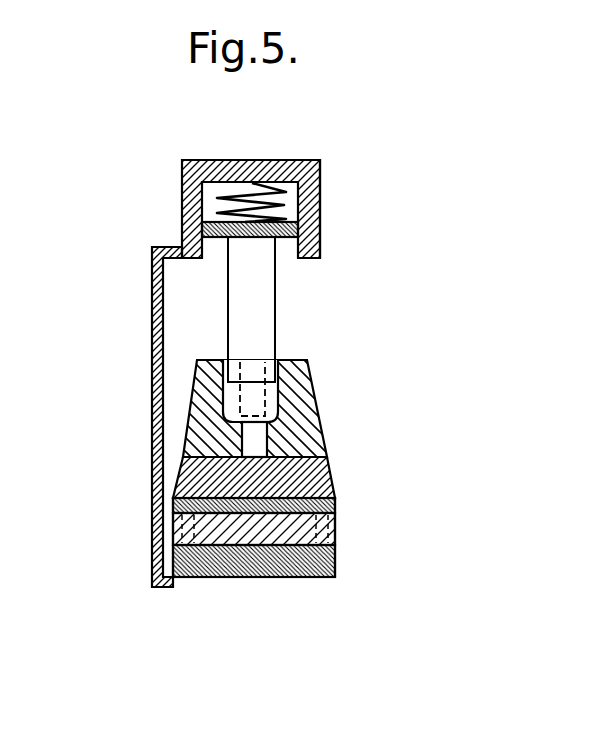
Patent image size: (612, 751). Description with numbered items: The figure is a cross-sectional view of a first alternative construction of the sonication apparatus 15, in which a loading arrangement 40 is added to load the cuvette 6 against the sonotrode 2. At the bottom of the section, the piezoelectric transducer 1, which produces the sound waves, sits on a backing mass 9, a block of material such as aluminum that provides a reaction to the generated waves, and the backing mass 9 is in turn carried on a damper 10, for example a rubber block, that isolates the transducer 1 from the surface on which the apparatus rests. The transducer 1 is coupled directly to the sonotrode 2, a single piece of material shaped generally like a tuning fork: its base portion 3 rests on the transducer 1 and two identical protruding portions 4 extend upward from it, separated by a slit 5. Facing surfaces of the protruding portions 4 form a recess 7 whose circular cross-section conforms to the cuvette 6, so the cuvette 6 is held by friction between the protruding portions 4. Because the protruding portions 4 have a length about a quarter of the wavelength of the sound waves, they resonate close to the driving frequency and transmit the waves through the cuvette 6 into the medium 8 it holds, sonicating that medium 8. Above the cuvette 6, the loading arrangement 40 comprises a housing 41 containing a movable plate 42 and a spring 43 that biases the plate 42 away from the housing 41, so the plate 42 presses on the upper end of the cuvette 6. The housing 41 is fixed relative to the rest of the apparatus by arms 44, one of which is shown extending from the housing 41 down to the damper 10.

The piezoelectric transducer 1 is at (317, 502).
The sonotrode 2 is at (203, 437).
The base portion 3 is at (197, 485).
The protruding portions 4 is at (293, 358).
The slit 5 is at (254, 442).
The cuvette 6 is at (265, 290).
The recess 7 is at (293, 382).
The medium 8 is at (252, 358).
The backing mass 9 is at (283, 538).
The damper 10 is at (226, 557).
The sonication apparatus 15 is at (333, 420).
The loading arrangement 40 is at (335, 158).
The housing 41 is at (268, 160).
The movable plate 42 is at (188, 230).
The spring 43 is at (246, 160).
The arms 44 is at (152, 280).